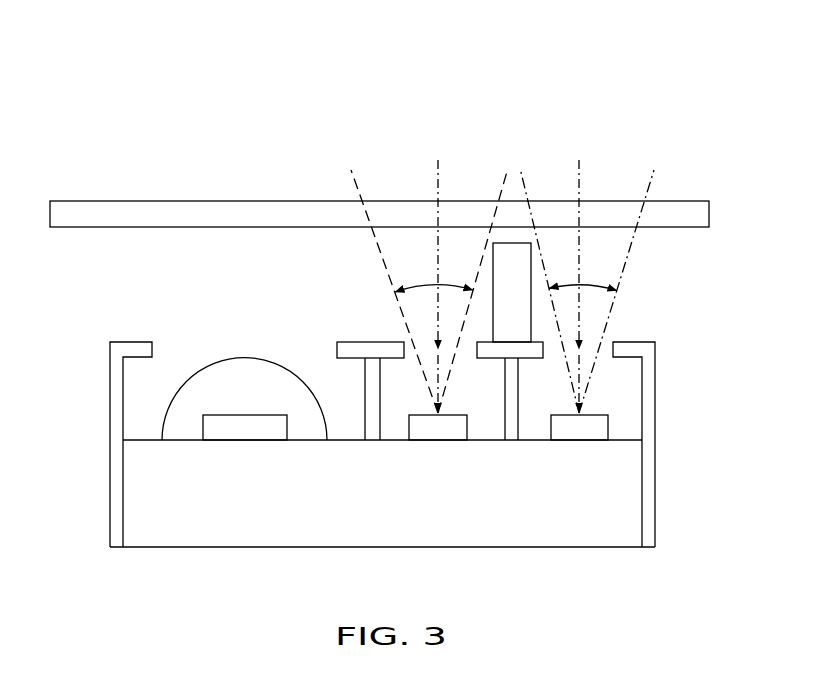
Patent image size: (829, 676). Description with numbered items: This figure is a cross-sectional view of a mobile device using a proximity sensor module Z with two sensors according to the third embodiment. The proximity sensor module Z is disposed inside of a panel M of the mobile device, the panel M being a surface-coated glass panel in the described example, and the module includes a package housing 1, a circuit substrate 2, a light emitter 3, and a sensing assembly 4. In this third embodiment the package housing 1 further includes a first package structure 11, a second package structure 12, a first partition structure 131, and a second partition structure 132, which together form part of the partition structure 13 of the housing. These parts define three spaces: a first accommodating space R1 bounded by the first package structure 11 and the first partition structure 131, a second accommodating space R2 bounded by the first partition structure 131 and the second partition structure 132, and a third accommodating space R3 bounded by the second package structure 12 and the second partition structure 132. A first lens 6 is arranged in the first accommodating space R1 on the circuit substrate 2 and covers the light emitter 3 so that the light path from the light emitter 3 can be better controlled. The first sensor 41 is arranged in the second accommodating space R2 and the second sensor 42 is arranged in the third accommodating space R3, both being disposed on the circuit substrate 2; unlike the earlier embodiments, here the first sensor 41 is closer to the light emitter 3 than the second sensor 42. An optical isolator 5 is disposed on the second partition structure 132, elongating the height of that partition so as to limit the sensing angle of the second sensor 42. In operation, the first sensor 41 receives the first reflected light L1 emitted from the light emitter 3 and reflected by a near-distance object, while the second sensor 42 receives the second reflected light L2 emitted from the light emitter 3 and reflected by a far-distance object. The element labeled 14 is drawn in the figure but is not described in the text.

The package housing 1 is at (78, 33).
The first package structure 11 is at (120, 415).
The second package structure 12 is at (648, 418).
The partition structure 13 is at (334, 294).
The first partition structure 131 is at (373, 415).
The second partition structure 132 is at (512, 377).
The bottom plate 14 is at (359, 282).
The circuit substrate 2 is at (637, 514).
The light emitter 3 is at (228, 417).
The sensing assembly 4 is at (518, 464).
The first sensor 41 is at (425, 432).
The second sensor 42 is at (598, 430).
The optical isolator 5 is at (506, 240).
The first lens 6 is at (280, 369).
The panel M is at (177, 204).
The sensor module P is at (707, 56).
The first reflected light L1 is at (577, 272).
The second reflected light L2 is at (435, 272).
The proximity sensor module Z is at (652, 320).
The first accommodating space R1 is at (170, 372).
The second accommodating space R2 is at (401, 384).
The third accommodating space R3 is at (619, 384).